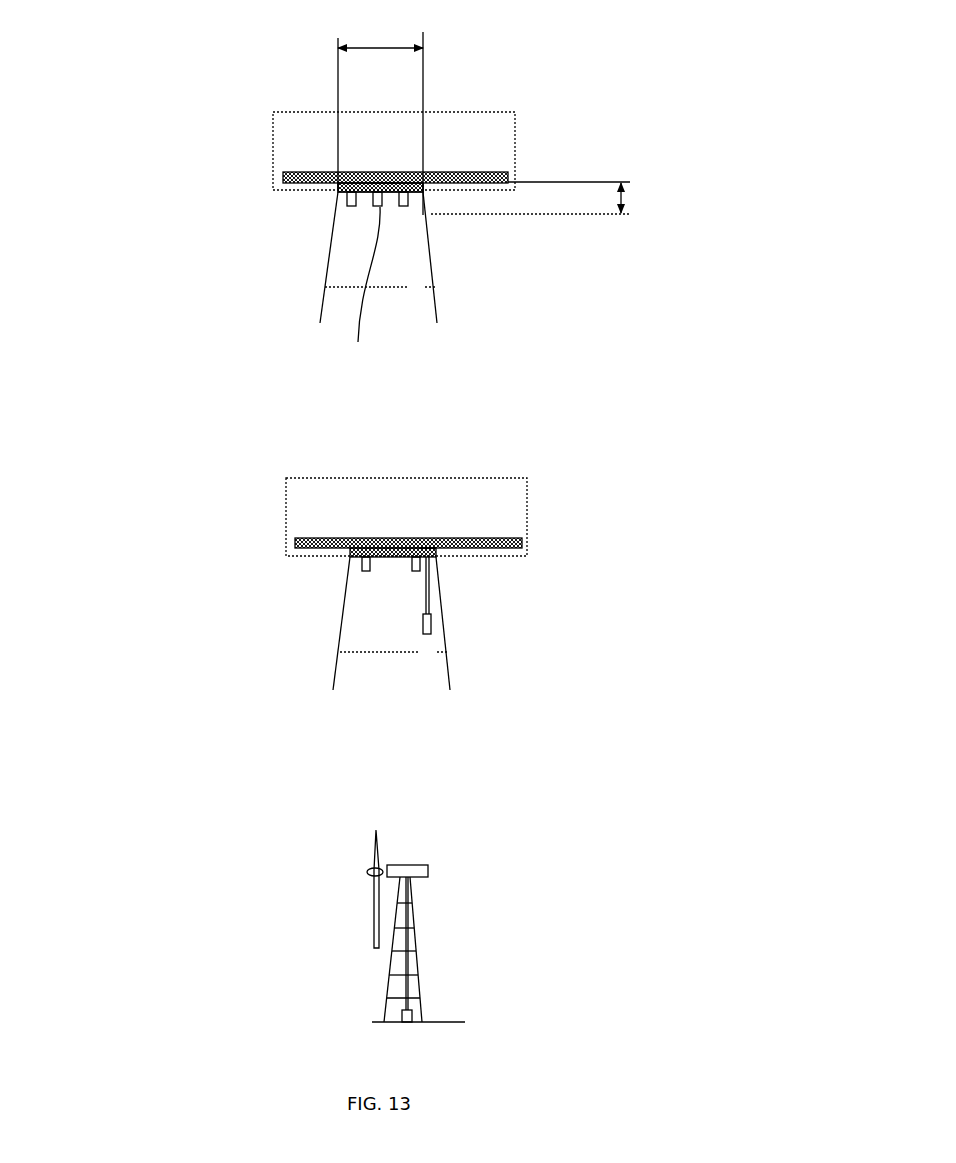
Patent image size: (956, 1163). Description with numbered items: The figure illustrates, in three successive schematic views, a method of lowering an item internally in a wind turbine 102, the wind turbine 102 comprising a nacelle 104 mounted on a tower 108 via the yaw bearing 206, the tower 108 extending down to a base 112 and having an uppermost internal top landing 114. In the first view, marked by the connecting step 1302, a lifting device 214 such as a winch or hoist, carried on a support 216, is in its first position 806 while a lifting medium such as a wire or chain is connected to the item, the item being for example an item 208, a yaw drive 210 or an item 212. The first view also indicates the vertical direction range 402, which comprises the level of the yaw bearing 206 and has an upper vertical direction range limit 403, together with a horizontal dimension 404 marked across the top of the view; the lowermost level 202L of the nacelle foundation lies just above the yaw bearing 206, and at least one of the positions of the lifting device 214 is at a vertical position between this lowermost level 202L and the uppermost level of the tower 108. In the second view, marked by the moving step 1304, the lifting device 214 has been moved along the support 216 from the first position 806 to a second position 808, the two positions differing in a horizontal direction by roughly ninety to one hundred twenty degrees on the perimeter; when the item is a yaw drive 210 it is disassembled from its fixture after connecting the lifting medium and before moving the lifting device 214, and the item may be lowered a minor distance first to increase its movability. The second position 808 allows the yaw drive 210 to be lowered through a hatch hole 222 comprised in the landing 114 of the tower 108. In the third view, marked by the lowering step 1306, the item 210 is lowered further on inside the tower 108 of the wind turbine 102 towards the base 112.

The connecting step 1302 is at (155, 172).
The reference width 404 is at (424, 37).
The first position 806 is at (381, 168).
The upper vertical direction range limit 403 is at (601, 160).
The lowermost level of the foundation 202L is at (567, 181).
The vertical direction range 402 is at (627, 195).
The yaw bearing 206 is at (337, 193).
The item 208 is at (352, 207).
The lifting device 214 is at (386, 206).
The yaw drive 210 is at (400, 1015).
The tower 108 is at (437, 313).
The moving step 1304 is at (130, 537).
The second position 808 is at (428, 535).
The support 216 is at (300, 546).
The item 212 is at (415, 572).
The top landing 114 is at (355, 653).
The hatch hole 222 is at (428, 652).
The lowering step 1306 is at (195, 893).
The wind turbine 102 is at (308, 866).
The nacelle 104 is at (430, 871).
The base 112 is at (437, 1021).